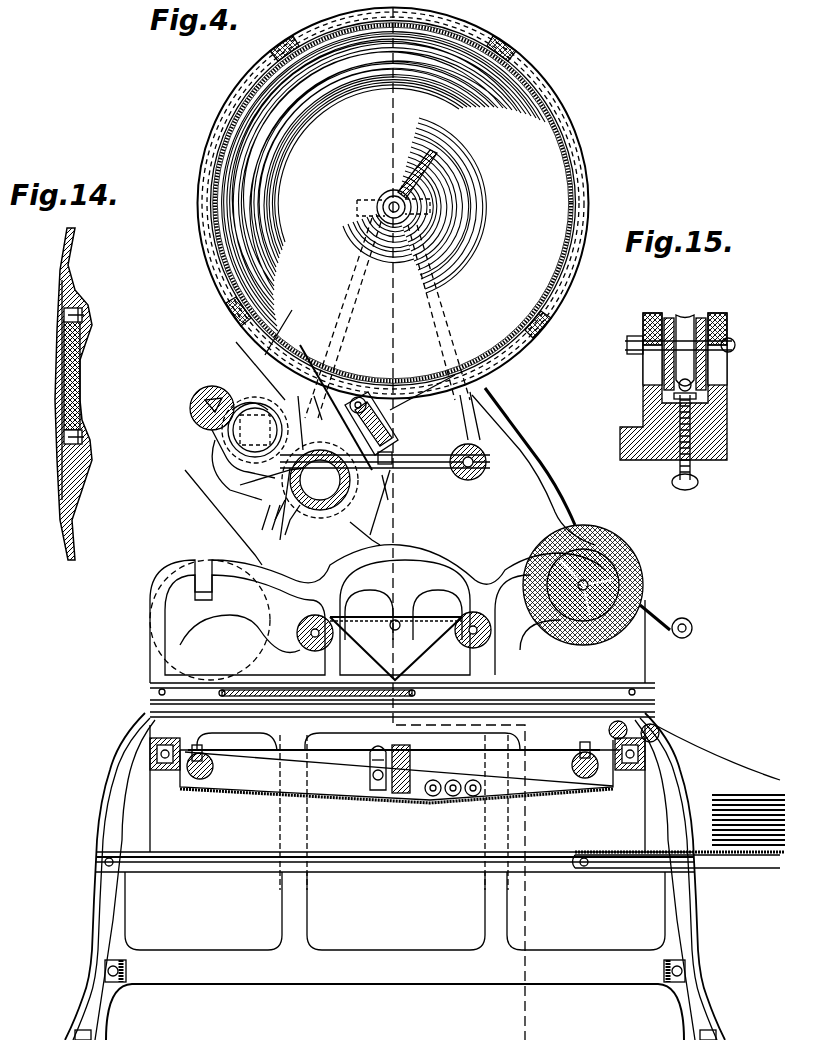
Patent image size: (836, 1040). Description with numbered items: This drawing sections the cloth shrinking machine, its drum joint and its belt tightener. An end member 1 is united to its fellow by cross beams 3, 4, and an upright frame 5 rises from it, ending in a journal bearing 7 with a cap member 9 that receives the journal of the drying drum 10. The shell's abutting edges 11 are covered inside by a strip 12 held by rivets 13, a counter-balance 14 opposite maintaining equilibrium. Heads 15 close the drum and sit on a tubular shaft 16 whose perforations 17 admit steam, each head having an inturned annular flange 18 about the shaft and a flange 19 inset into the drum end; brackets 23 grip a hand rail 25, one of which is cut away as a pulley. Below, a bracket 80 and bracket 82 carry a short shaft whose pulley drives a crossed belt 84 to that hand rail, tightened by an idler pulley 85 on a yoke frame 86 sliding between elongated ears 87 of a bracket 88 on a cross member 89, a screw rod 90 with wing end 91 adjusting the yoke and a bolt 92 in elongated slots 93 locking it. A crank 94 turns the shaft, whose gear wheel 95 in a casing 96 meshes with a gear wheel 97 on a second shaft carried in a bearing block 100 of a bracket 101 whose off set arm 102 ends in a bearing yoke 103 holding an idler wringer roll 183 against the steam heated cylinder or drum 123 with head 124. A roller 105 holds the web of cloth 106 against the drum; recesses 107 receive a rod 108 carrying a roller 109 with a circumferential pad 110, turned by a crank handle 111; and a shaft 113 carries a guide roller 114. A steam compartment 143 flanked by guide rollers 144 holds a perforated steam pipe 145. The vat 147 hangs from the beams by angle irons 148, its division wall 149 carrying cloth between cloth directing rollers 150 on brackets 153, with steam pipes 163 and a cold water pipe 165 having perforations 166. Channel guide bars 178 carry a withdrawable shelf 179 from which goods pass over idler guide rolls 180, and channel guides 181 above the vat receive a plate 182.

In FIG. 4, the end member 1 is at (348, 982).
In FIG. 4, the cross beam 3 is at (150, 760).
In FIG. 4, the cross beam 4 is at (128, 965).
In FIG. 4, the frame 5 is at (440, 20).
In FIG. 4, the journal bearing 7 is at (360, 210).
In FIG. 4, the cap member 9 is at (385, 190).
In FIG. 4, the drying drum 10 is at (216, 146).
In FIG. 14, the drying drum 10 is at (65, 538).
In FIG. 4, the abutting edges 11 is at (258, 352).
In FIG. 14, the abutting edges 11 is at (55, 395).
In FIG. 4, the strip 12 is at (286, 323).
In FIG. 14, the strip 12 is at (78, 378).
In FIG. 14, the rivets 13 is at (84, 318).
In FIG. 4, the counter-balance 14 is at (516, 84).
In FIG. 4, the head 15 is at (520, 182).
In FIG. 4, the shaft 16 is at (378, 200).
In FIG. 4, the perforations 17 is at (420, 172).
In FIG. 4, the inturned annular flange 18 is at (410, 222).
In FIG. 4, the flange 19 is at (568, 216).
In FIG. 4, the bracket 23 is at (280, 52).
In FIG. 4, the hand rail 25 is at (589, 152).
In FIG. 4, the bracket 80 is at (335, 335).
In FIG. 4, the bracket 82 is at (263, 518).
In FIG. 4, the belt 84 is at (332, 318).
In FIG. 4, the idler pulley 85 is at (420, 380).
In FIG. 15, the idler pulley 85 is at (686, 312).
In FIG. 15, the yoke frame 86 is at (706, 372).
In FIG. 4, the elongated ears 87 is at (402, 300).
In FIG. 15, the elongated ears 87 is at (643, 407).
In FIG. 4, the bracket 88 is at (392, 450).
In FIG. 15, the bracket 88 is at (641, 462).
In FIG. 4, the cross member 89 is at (440, 478).
In FIG. 15, the screw rod 90 is at (692, 430).
In FIG. 4, the wing end 91 is at (387, 495).
In FIG. 15, the wing end 91 is at (698, 484).
In FIG. 15, the bolt 92 is at (737, 342).
In FIG. 4, the elongated slots 93 is at (360, 396).
In FIG. 15, the elongated slots 93 is at (645, 372).
In FIG. 4, the crank 94 is at (272, 545).
In FIG. 4, the gear wheel 95 is at (385, 530).
In FIG. 4, the casing 96 is at (392, 528).
In FIG. 4, the gear wheel 97 is at (262, 400).
In FIG. 4, the bearing block 100 is at (225, 478).
In FIG. 4, the bracket 101 is at (232, 488).
In FIG. 4, the off set arm 102 is at (240, 455).
In FIG. 4, the bearing yoke 103 is at (190, 405).
In FIG. 4, the roller 105 is at (478, 450).
In FIG. 4, the web of cloth 106 is at (490, 392).
In FIG. 4, the recesses 107 is at (210, 590).
In FIG. 4, the rod 108 is at (598, 645).
In FIG. 4, the roller 109 is at (640, 592).
In FIG. 4, the circumferential pad 110 is at (240, 640).
In FIG. 4, the crank handle 111 is at (676, 638).
In FIG. 4, the shaft 113 is at (348, 512).
In FIG. 4, the roller 114 is at (312, 512).
In FIG. 4, the cylinder or drum 123 is at (238, 405).
In FIG. 4, the head 124 is at (240, 410).
In FIG. 4, the steam compartment 143 is at (430, 648).
In FIG. 4, the guide rollers 144 is at (297, 635).
In FIG. 4, the perforated steam pipe 145 is at (402, 615).
In FIG. 4, the vat 147 is at (262, 800).
In FIG. 4, the angle irons 148 is at (170, 775).
In FIG. 4, the division wall 149 is at (400, 796).
In FIG. 4, the cloth directing roller 150 is at (204, 780).
In FIG. 4, the brackets 153 is at (205, 760).
In FIG. 4, the steam pipes 163 is at (468, 800).
In FIG. 4, the cold water pipe 165 is at (370, 778).
In FIG. 4, the perforations 166 is at (370, 790).
In FIG. 4, the channel guide bars 178 is at (236, 872).
In FIG. 4, the shelf 179 is at (727, 872).
In FIG. 4, the idler guide rolls 180 is at (640, 728).
In FIG. 4, the channel guides 181 is at (640, 688).
In FIG. 4, the plate 182 is at (358, 809).
In FIG. 4, the idler wringer roll 183 is at (205, 418).